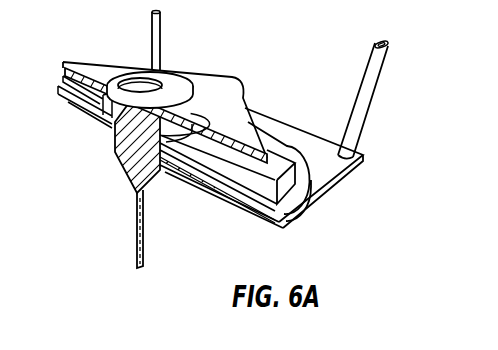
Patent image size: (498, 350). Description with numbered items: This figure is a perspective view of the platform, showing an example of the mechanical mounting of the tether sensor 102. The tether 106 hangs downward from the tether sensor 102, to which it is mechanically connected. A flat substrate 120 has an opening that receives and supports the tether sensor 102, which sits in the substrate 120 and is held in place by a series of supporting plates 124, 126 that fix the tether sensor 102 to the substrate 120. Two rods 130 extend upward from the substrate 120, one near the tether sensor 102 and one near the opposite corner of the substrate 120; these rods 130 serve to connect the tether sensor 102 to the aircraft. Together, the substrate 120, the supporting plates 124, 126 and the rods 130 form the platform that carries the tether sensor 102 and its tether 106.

The tether sensor 102 is at (129, 149).
The tether 106 is at (135, 224).
The substrate 120 is at (323, 172).
The supporting plate 124 is at (202, 160).
The supporting plate 126 is at (233, 115).
The rod 130 is at (162, 43).